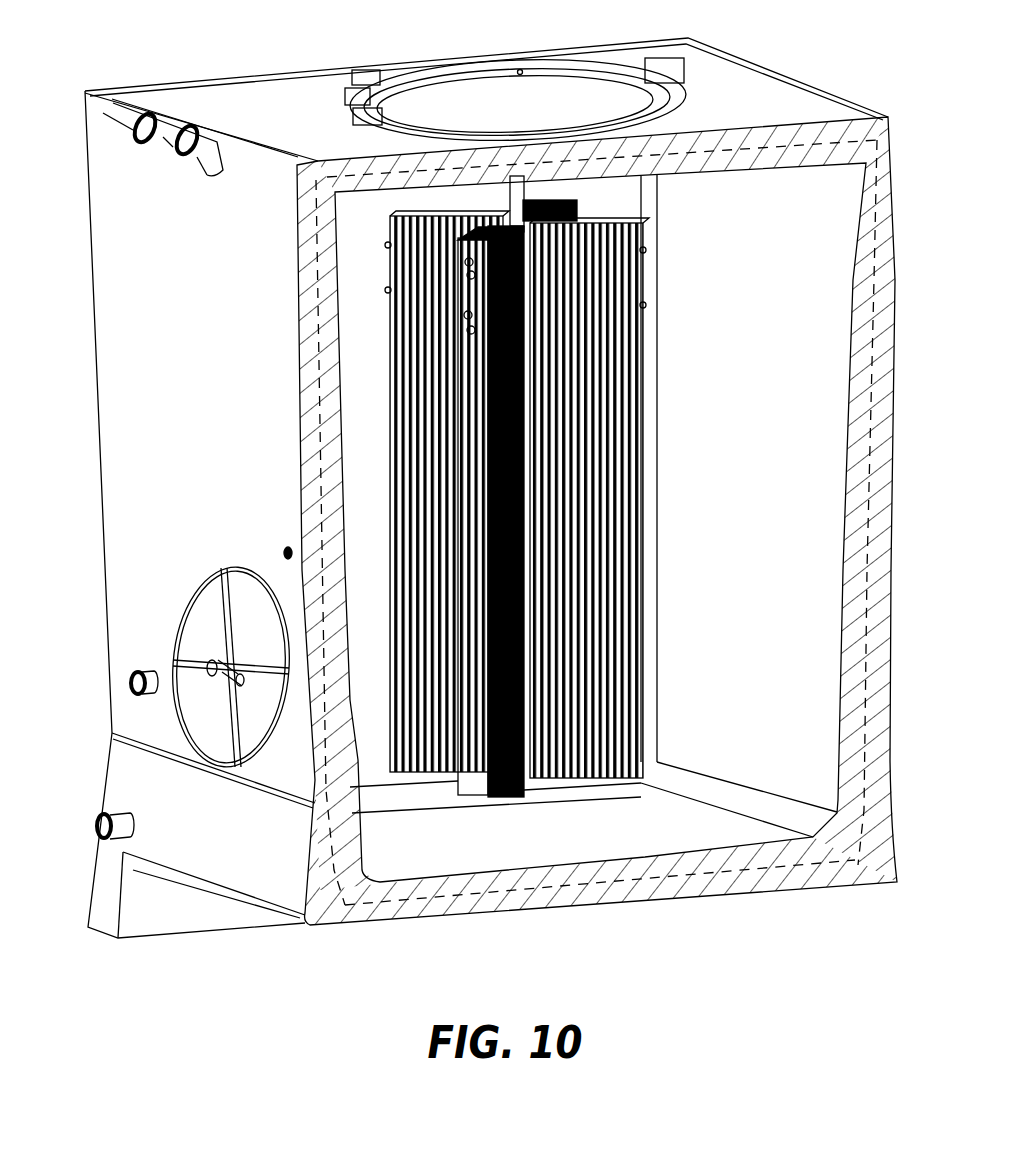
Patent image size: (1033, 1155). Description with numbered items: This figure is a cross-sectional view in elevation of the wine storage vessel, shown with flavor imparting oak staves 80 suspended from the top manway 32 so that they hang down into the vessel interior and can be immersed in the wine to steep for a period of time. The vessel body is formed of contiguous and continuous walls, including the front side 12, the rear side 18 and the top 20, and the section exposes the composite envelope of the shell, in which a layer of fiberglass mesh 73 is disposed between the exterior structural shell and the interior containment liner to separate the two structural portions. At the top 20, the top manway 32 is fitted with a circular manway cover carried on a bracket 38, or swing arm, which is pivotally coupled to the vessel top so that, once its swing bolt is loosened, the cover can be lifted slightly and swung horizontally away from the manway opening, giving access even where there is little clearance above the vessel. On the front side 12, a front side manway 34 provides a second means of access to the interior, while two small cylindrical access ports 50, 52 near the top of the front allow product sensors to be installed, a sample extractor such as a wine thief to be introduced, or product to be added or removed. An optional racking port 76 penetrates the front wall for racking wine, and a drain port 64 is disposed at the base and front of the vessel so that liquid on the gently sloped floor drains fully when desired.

The front side 12 is at (97, 425).
The rear side 18 is at (880, 457).
The top 20 is at (840, 133).
The top manway 32 is at (558, 93).
The front side manway 34 is at (193, 623).
The bracket 38 is at (418, 72).
The cylindrical access port 50 is at (133, 134).
The cylindrical access port 52 is at (190, 160).
The drain port 64 is at (100, 827).
The layer of fiberglass mesh 73 is at (757, 140).
The racking port 76 is at (125, 685).
The oak staves 80 is at (640, 362).